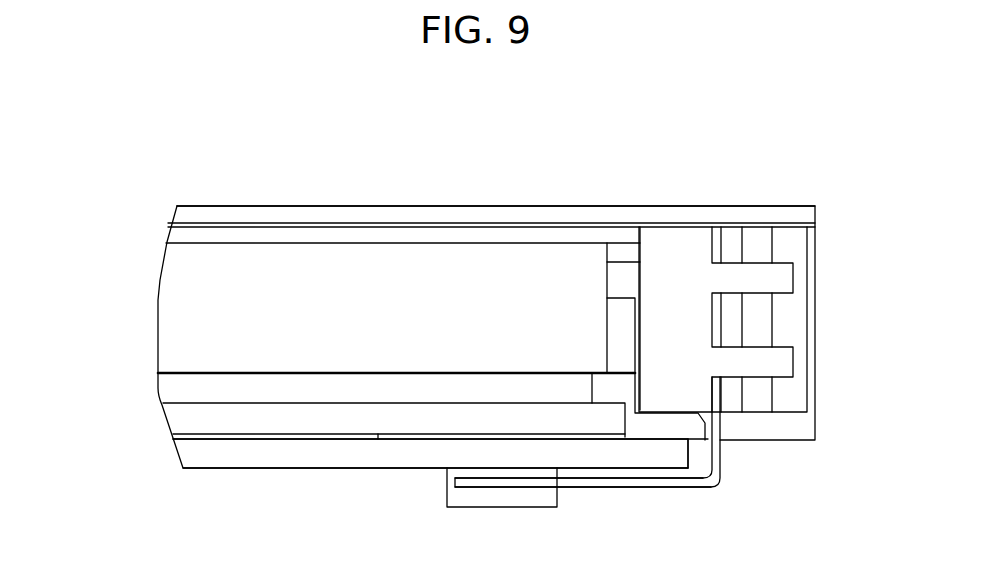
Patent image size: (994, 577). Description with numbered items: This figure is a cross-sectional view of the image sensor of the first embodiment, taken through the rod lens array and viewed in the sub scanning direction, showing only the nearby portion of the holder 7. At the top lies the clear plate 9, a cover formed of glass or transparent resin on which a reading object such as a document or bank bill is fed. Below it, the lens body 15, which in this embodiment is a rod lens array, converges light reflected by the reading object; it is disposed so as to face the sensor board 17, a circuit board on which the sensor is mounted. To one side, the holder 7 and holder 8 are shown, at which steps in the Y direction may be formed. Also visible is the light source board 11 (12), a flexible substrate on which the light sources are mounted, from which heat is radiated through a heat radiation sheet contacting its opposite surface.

The clear plate 9 is at (290, 212).
The lens body 15 is at (220, 312).
The holder 7 is at (673, 256).
The holder 8 is at (772, 295).
The sensor board 17 is at (605, 452).
The light source board 11 is at (715, 452).
The light source board 12 is at (675, 520).